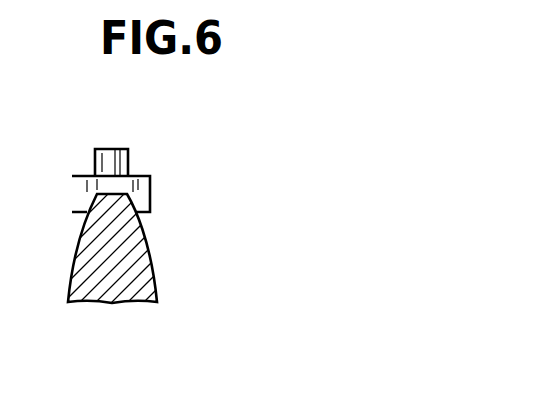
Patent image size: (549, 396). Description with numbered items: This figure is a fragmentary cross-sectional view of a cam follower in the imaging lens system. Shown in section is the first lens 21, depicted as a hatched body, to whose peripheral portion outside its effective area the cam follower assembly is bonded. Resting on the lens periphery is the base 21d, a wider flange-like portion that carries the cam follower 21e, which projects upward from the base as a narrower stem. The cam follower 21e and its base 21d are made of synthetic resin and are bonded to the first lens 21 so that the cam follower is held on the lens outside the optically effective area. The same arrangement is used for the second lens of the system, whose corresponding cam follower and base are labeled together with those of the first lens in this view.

The first lens 21 is at (150, 264).
The base 21d is at (150, 190).
The cam follower 21e is at (128, 162).